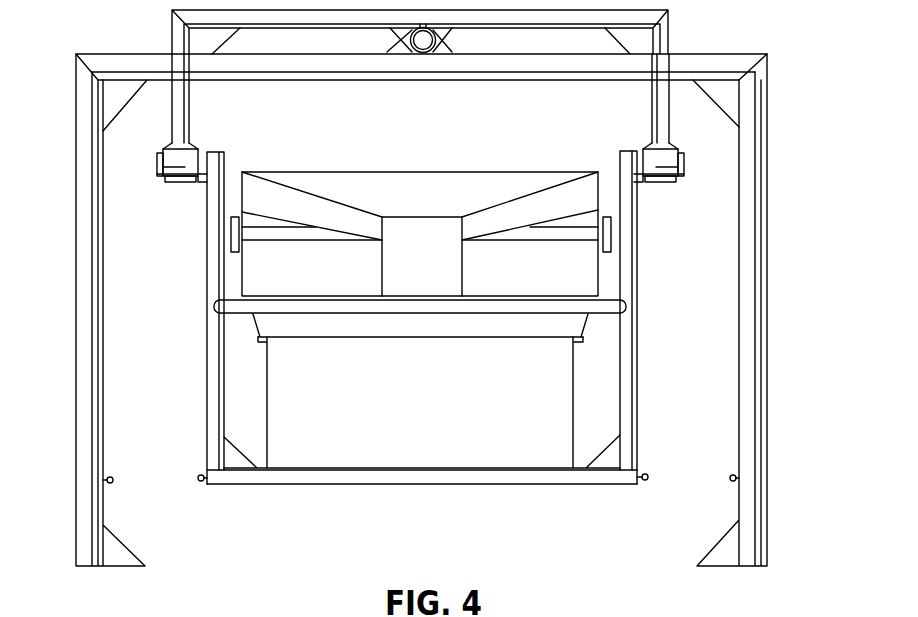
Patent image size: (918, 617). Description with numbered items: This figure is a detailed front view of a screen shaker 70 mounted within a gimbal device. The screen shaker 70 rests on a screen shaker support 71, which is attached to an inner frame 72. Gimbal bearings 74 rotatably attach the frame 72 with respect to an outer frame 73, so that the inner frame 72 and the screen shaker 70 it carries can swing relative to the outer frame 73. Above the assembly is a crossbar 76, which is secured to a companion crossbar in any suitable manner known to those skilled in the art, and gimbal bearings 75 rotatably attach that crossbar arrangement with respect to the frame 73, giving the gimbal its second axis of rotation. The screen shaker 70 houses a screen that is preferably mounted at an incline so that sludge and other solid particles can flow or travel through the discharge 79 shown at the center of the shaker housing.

The screen shaker 70 is at (250, 157).
The screen shaker support 71 is at (437, 468).
The frame 72 is at (209, 302).
The frame 73 is at (83, 450).
The gimbal bearings 74 is at (168, 158).
The gimbal bearings 75 is at (443, 38).
The crossbar 76 is at (663, 30).
The discharge 79 is at (388, 267).